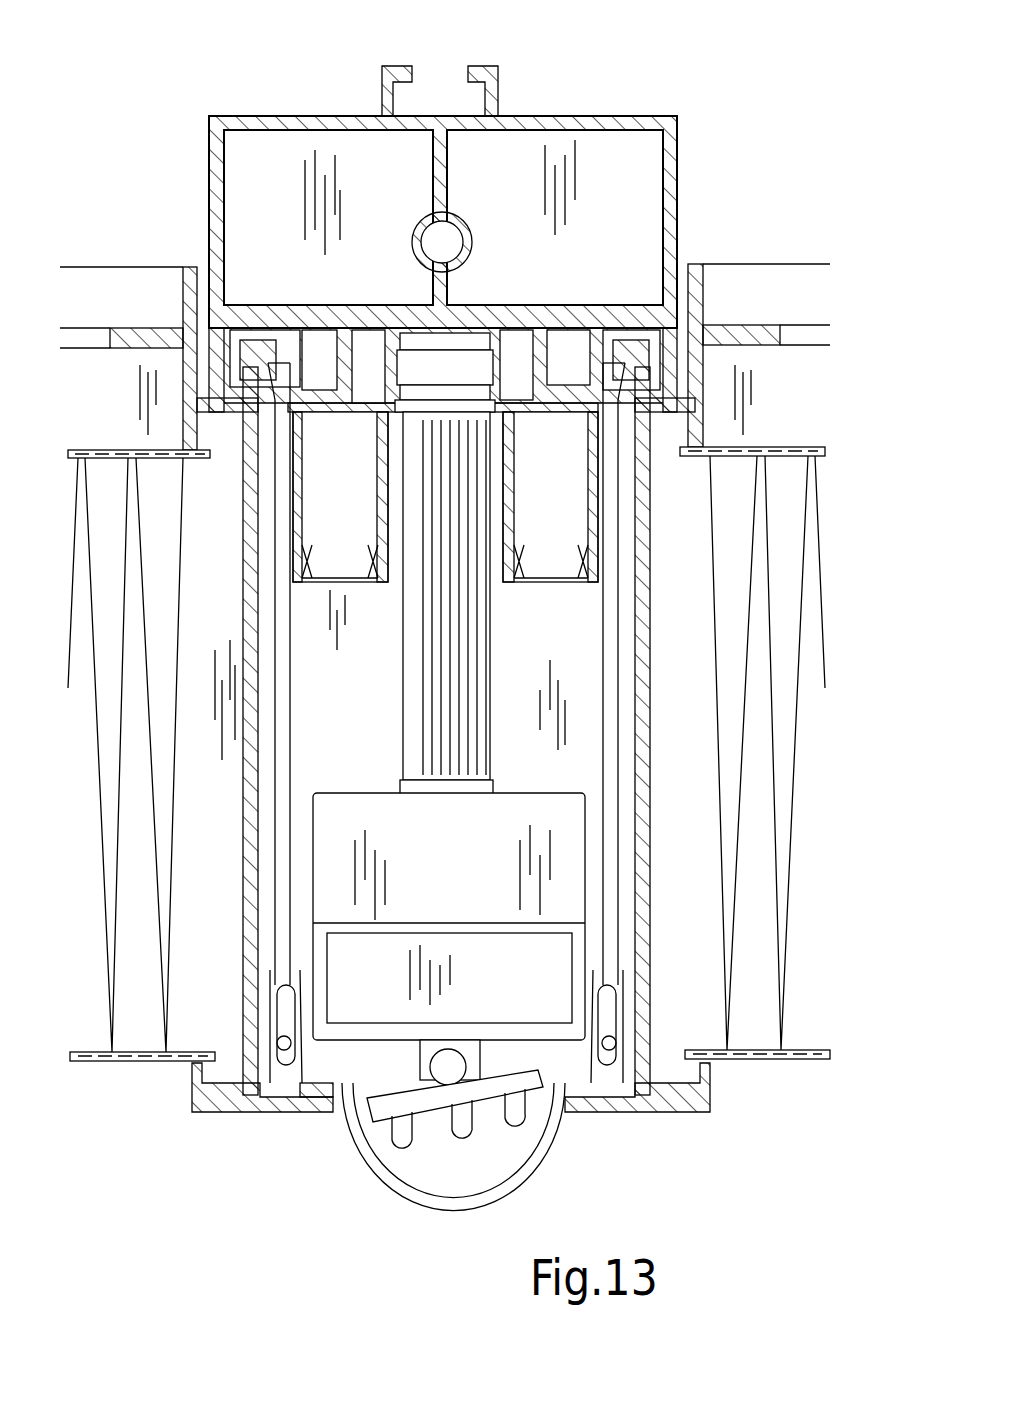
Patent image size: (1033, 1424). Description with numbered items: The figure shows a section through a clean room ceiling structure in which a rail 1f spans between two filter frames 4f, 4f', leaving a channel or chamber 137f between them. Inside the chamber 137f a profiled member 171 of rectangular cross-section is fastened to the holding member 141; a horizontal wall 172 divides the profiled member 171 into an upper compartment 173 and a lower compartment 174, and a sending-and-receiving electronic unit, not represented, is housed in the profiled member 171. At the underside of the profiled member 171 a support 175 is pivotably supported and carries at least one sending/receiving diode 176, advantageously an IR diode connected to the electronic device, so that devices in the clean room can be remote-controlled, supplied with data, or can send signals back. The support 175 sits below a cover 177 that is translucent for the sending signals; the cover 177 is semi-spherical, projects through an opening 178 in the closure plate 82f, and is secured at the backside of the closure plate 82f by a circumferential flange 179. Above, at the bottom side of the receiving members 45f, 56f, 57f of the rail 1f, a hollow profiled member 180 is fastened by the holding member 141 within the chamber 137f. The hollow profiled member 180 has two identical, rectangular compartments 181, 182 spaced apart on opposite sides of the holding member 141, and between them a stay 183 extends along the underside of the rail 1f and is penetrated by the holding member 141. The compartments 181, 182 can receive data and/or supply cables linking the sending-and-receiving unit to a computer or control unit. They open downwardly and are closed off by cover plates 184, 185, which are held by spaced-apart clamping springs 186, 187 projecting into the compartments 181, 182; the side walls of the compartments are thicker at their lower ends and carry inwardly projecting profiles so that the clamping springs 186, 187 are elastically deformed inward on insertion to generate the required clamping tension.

The rail 1f is at (639, 111).
The receiving member 57f is at (315, 345).
The compartment 181 is at (356, 433).
The stay 183 is at (392, 345).
The receiving member 45f is at (483, 337).
The receiving member 56f is at (628, 340).
The filter frame 4f is at (759, 300).
The filter frame 4f' is at (128, 307).
The chamber 137f is at (570, 703).
The hollow profiled member 180 is at (332, 602).
The compartment 182 is at (557, 450).
The cover plate 184 is at (300, 586).
The clamping spring 186 is at (375, 560).
The cover plate 185 is at (542, 582).
The clamping spring 187 is at (577, 560).
The holding member 141 is at (457, 705).
The compartment 173 is at (548, 830).
The profiled member 171 is at (592, 871).
The horizontal wall 172 is at (540, 930).
The compartment 174 is at (540, 995).
The circumferential flange 179 is at (258, 1114).
The closure plate 82f is at (680, 1107).
The opening 178 is at (337, 1113).
The cover 177 is at (547, 1142).
The support 175 is at (385, 1120).
The sending/receiving diode 176 is at (398, 1145).